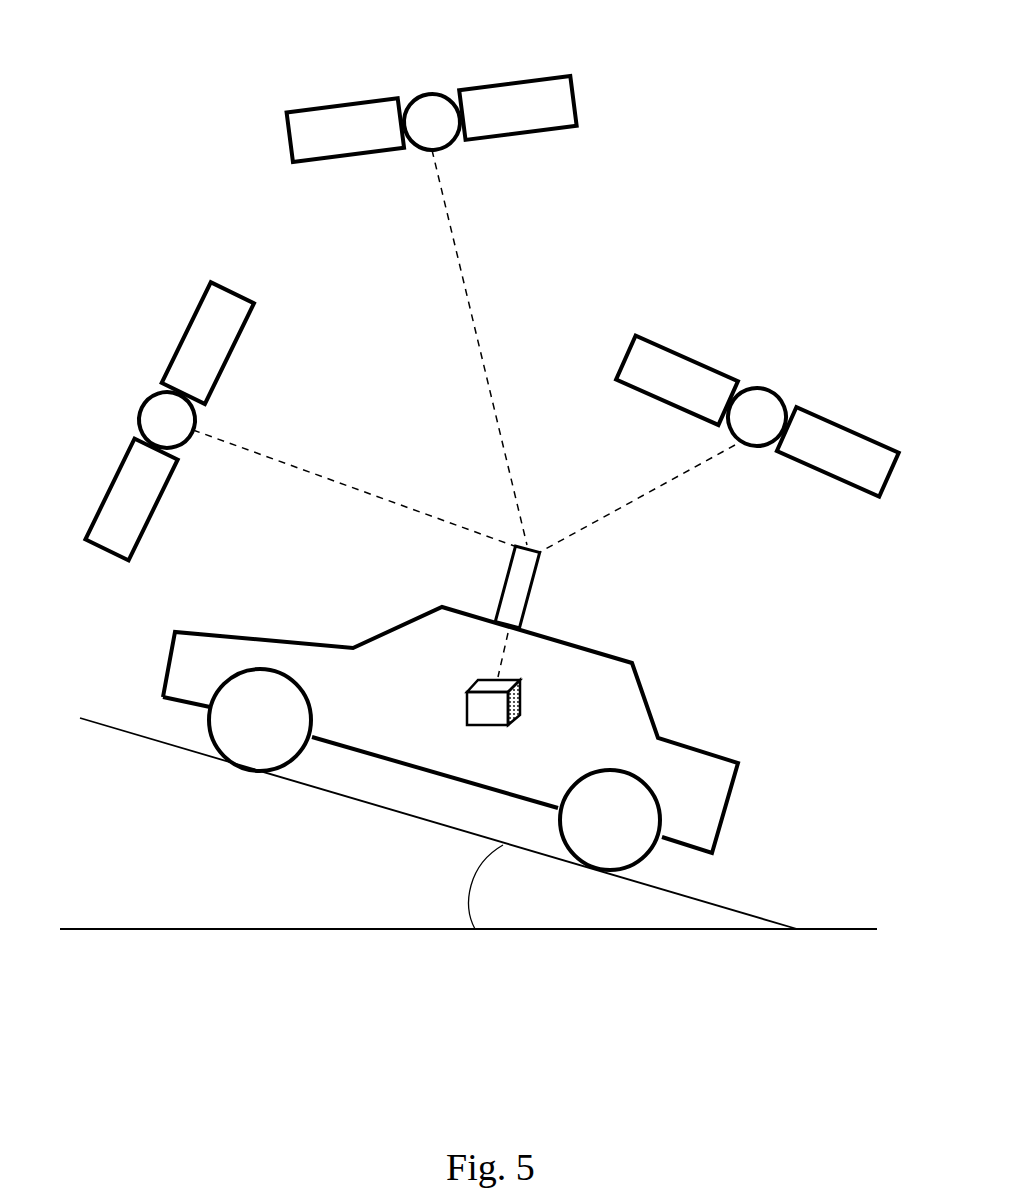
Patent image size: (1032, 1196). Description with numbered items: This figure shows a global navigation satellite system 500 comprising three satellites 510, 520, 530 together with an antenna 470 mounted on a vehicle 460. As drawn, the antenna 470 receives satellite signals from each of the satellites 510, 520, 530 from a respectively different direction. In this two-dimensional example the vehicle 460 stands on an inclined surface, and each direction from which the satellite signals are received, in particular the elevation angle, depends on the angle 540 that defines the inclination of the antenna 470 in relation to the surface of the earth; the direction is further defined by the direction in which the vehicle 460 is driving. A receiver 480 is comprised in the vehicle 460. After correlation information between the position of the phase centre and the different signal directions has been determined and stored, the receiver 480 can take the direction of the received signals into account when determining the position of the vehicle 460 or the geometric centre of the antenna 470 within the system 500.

The global navigation satellite system 500 is at (712, 47).
The satellite 510 is at (140, 407).
The satellite 520 is at (427, 92).
The satellite 530 is at (768, 388).
The vehicle 460 is at (623, 690).
The antenna 470 is at (542, 563).
The receiver 480 is at (485, 727).
The angle 540 is at (600, 903).